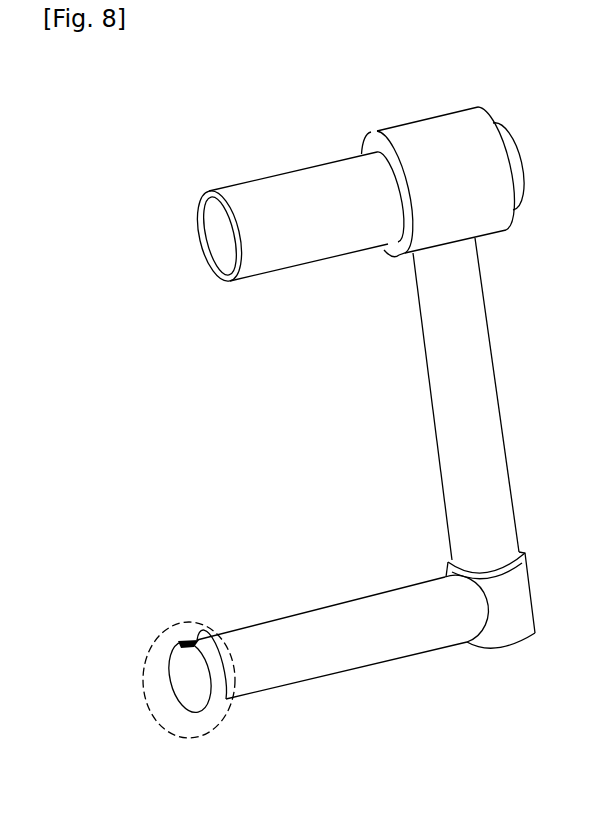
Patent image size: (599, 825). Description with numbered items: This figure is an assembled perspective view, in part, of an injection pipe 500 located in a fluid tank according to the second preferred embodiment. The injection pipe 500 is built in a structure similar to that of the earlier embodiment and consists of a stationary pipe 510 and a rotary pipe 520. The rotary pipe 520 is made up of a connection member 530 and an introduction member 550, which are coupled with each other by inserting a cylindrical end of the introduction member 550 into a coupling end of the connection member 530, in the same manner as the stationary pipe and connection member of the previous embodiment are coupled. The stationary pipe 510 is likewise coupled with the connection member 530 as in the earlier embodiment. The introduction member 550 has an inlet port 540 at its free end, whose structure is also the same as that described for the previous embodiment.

The injection pipe 500 is at (92, 67).
The stationary pipe 510 is at (282, 170).
The rotary pipe 520 is at (335, 478).
The connection member 530 is at (428, 373).
The inlet port 540 is at (218, 723).
The introduction member 550 is at (327, 603).